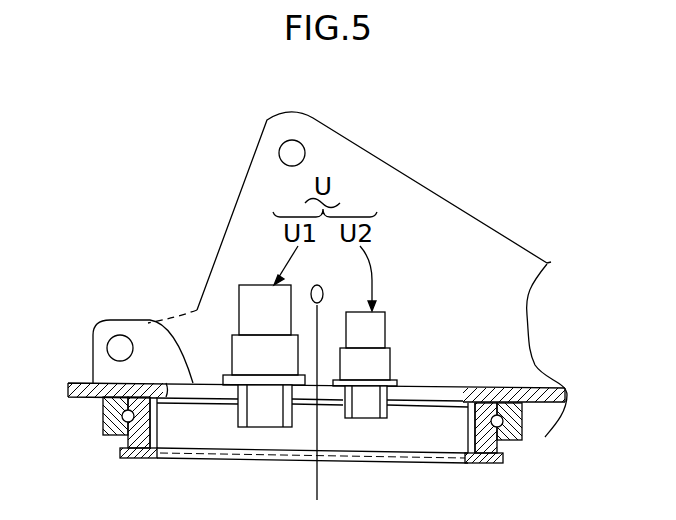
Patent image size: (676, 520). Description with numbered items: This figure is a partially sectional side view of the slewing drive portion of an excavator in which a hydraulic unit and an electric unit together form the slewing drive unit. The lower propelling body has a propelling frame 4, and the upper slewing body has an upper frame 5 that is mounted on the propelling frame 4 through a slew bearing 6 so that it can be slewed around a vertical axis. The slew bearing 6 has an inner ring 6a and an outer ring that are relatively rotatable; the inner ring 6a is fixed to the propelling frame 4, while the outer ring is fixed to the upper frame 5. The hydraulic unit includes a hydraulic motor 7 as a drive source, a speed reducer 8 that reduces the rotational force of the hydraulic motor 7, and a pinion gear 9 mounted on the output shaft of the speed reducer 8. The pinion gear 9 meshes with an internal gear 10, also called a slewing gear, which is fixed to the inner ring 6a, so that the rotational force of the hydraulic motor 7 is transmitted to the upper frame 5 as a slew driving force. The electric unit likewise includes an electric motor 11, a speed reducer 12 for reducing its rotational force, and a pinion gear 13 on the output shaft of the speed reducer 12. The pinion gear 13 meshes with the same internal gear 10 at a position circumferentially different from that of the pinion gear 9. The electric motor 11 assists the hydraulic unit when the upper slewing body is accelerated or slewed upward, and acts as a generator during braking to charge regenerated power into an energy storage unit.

The propelling frame 4 is at (190, 459).
The upper frame 5 is at (160, 323).
The slew bearing 6 is at (100, 431).
The inner ring 6a is at (138, 447).
The hydraulic motor 7 is at (238, 312).
The speed reducer 8 is at (232, 355).
The pinion gear 9 is at (265, 428).
The internal gear 10 is at (467, 440).
The electric motor 11 is at (386, 330).
The speed reducer 12 is at (391, 365).
The pinion gear 13 is at (367, 419).